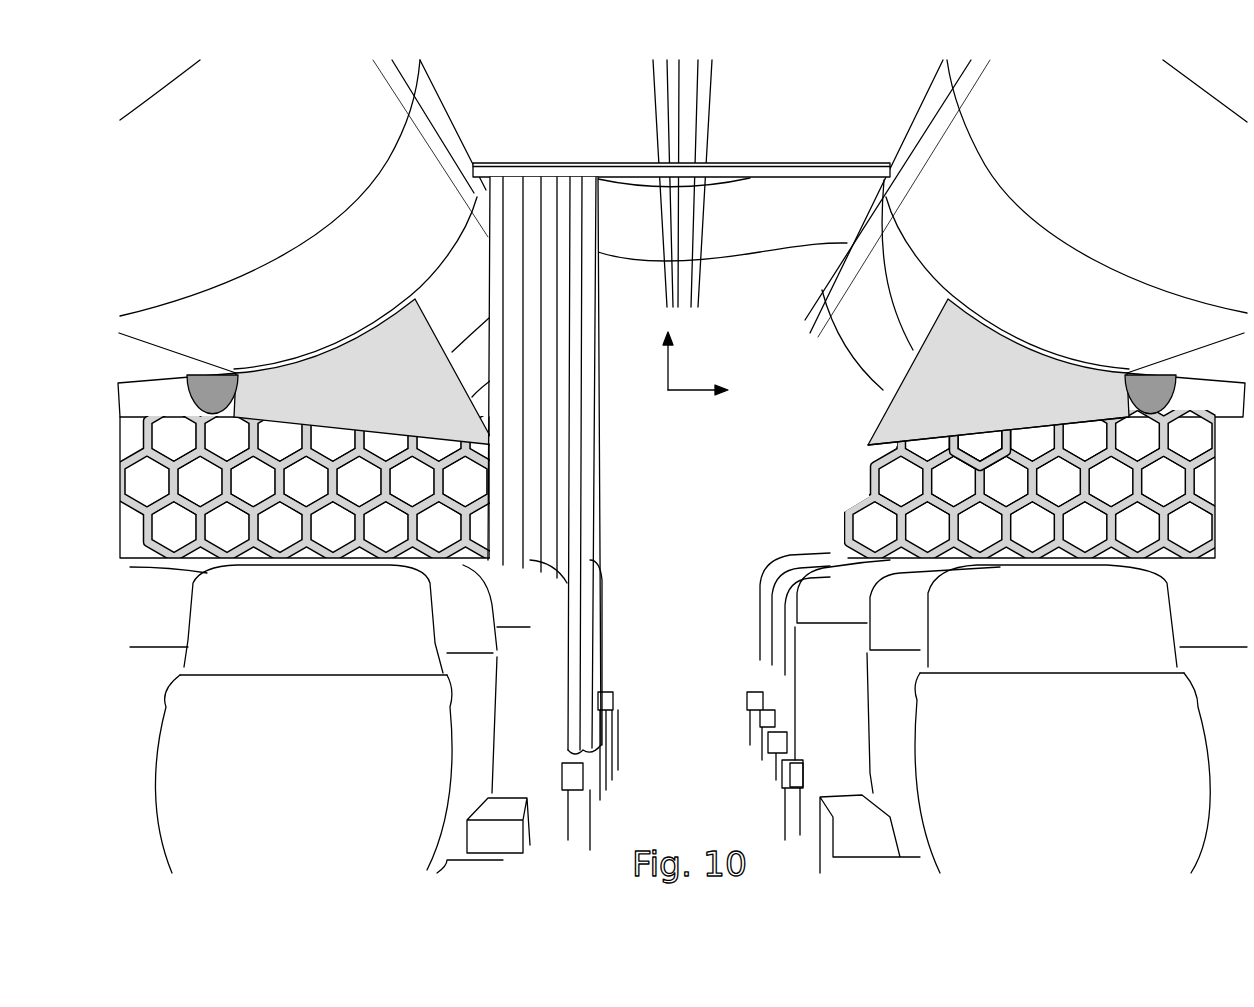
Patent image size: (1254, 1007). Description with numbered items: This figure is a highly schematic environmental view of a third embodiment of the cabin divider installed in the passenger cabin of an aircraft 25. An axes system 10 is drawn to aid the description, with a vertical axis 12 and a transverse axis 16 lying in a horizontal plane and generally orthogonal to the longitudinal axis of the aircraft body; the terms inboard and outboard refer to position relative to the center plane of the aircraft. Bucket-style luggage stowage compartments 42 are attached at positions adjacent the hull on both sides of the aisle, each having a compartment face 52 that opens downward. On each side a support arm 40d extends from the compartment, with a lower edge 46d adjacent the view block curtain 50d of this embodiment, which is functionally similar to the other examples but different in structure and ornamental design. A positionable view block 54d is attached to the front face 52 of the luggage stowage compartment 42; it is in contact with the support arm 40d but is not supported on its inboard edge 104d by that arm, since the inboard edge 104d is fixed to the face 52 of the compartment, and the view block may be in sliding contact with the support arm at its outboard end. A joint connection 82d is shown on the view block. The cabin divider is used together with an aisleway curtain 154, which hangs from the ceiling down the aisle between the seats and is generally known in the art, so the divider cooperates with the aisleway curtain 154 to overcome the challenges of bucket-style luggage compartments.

The axes system 10 is at (696, 360).
The vertical axis 12 is at (667, 369).
The transverse axis 16 is at (705, 394).
The aircraft 25 is at (795, 131).
The luggage stowage compartment 42 is at (470, 155).
The compartment face 52 is at (426, 138).
The aisleway curtain 154 is at (598, 432).
The support arm 40d is at (1210, 384).
The lower edge 46d is at (972, 430).
The view block curtain 50d is at (868, 484).
The positionable view block 54d is at (882, 400).
The joint connection 82d is at (1152, 372).
The inboard edge 104d is at (868, 430).